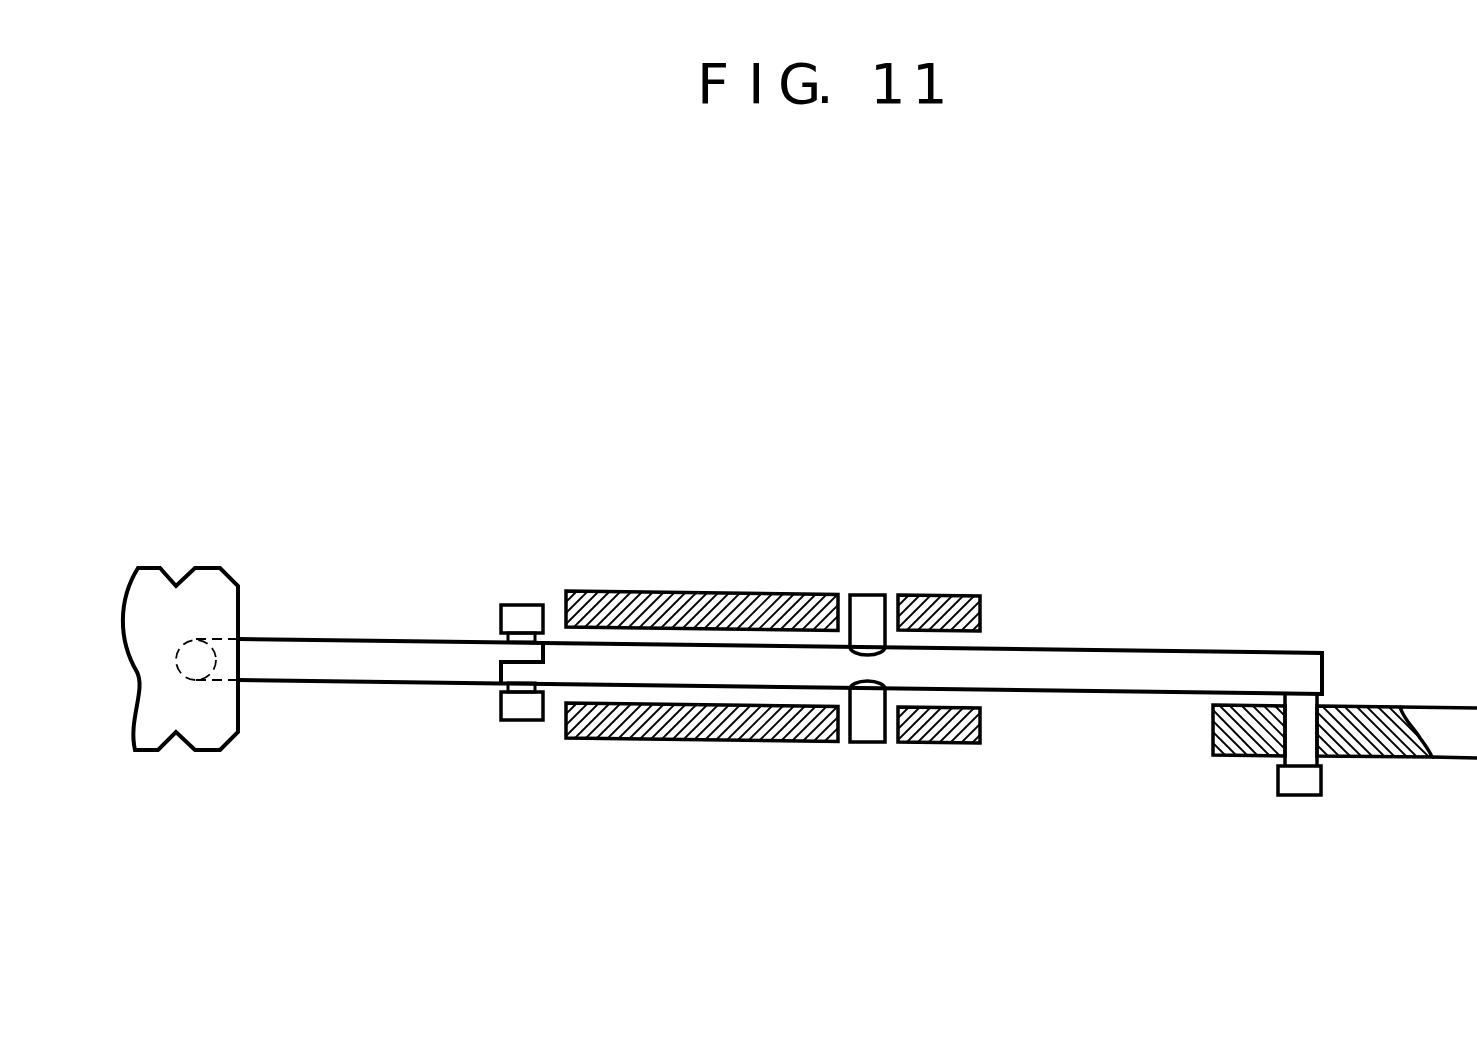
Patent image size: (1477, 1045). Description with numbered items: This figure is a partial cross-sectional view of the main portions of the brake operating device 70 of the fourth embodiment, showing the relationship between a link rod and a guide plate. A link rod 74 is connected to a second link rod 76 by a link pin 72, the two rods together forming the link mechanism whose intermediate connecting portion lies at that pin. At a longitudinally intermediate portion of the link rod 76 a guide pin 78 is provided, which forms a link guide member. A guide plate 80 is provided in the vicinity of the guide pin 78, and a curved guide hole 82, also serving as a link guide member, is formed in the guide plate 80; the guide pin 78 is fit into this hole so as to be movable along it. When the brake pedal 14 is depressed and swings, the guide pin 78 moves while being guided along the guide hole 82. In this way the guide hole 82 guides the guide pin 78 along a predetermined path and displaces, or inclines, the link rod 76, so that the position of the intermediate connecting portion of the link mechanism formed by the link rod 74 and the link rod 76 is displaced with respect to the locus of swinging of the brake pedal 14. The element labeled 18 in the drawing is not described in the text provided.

The brake pedal 14 is at (1382, 705).
The roller 18 is at (164, 520).
The brake operating device 70 is at (773, 617).
The link pin 72 is at (527, 605).
The link rod 74 is at (378, 640).
The link rod 76 is at (1127, 652).
The guide pin 78 is at (870, 595).
The guide plate 80 is at (707, 742).
The guide hole 82 is at (838, 722).